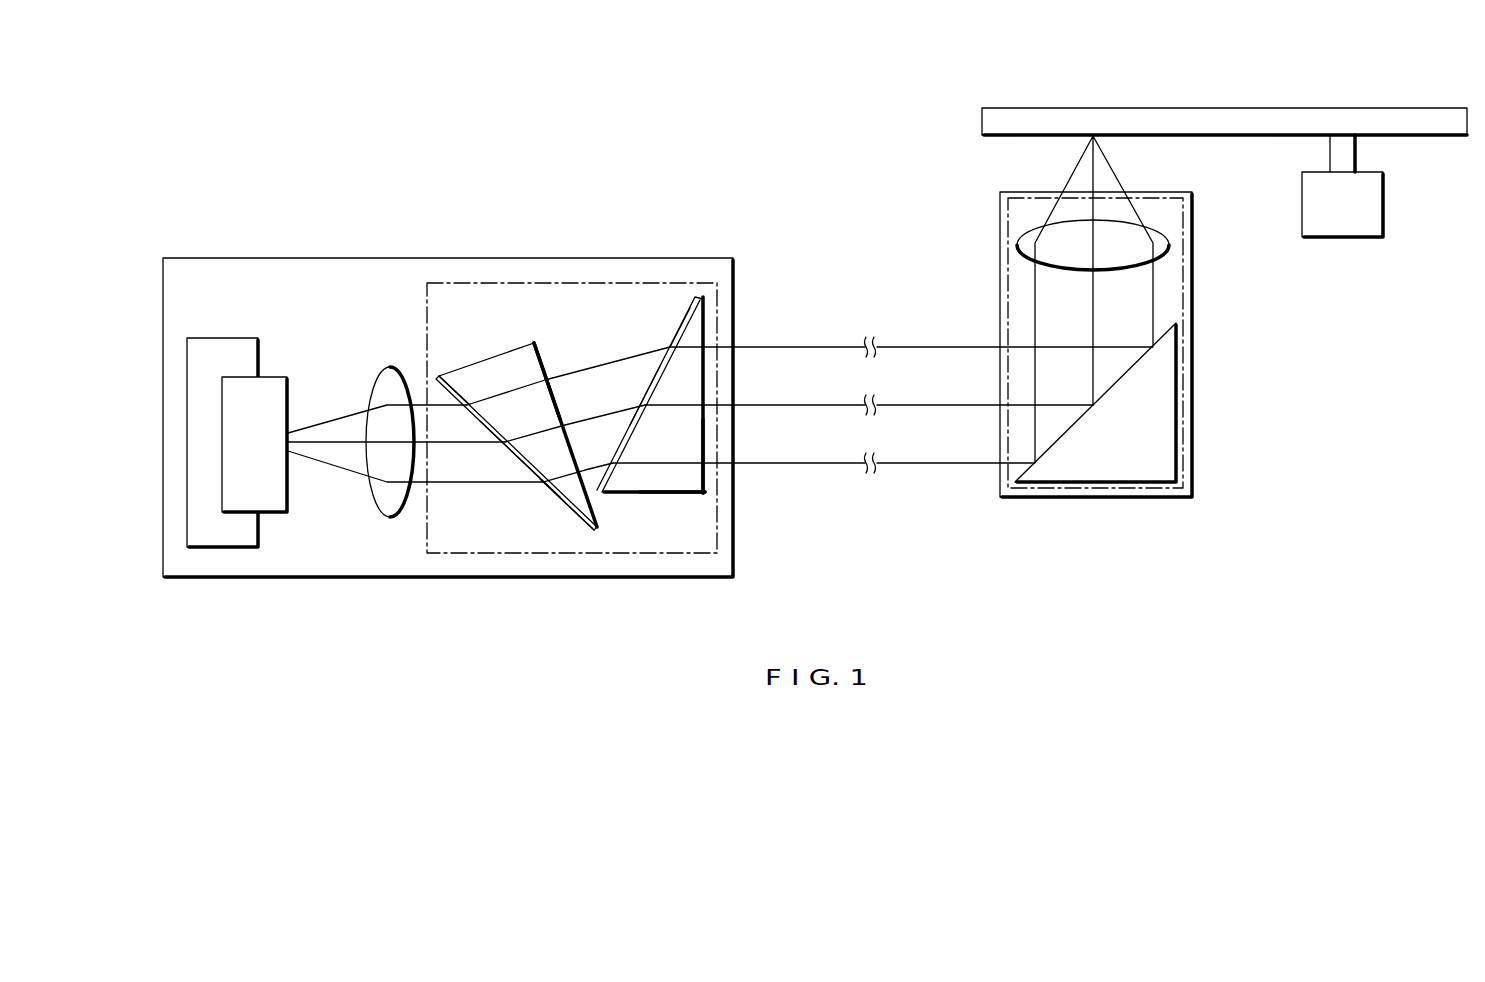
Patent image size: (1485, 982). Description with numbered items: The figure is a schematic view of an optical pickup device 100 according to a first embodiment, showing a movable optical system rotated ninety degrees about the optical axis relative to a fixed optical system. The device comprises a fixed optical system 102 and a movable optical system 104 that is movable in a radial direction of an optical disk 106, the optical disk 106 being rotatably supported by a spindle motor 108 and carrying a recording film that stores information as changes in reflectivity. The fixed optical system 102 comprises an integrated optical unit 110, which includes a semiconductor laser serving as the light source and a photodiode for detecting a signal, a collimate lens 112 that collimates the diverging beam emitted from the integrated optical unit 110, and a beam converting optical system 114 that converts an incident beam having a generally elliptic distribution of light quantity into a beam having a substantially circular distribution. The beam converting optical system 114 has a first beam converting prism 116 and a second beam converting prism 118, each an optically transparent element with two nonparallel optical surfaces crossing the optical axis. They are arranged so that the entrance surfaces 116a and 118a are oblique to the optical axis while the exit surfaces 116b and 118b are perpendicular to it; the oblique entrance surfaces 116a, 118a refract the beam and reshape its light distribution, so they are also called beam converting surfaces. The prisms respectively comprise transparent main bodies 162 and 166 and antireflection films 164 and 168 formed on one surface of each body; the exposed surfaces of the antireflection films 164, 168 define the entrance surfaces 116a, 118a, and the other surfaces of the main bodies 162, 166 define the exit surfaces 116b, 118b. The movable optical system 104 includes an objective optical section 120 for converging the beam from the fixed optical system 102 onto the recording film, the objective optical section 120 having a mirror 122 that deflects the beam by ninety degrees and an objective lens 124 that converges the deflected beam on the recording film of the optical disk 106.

The optical pickup apparatus 100 is at (614, 123).
The fixed optical system 102 is at (552, 257).
The movable optical system 104 is at (1193, 280).
The optical disk 106 is at (1122, 108).
The spindle motor 108 is at (1385, 203).
The integrated optical unit 110 is at (225, 338).
The collimate lens 112 is at (388, 365).
The beam converting optical system 114 is at (547, 553).
The first beam converting prism 116 is at (490, 346).
The entrance surface of first beam converting prism 116a is at (520, 463).
The exit surface of first beam converting prism 116b is at (538, 352).
The second beam converting prism 118 is at (664, 505).
The entrance surface of second beam converting prism 118a is at (643, 393).
The exit surface of second beam converting prism 118b is at (705, 475).
The objective optical section 120 is at (1185, 358).
The mirror 122 is at (1160, 433).
The objective lens 124 is at (1020, 243).
The transparent main body of first beam converting prism 162 is at (463, 378).
The antireflection film of first beam converting prism 164 is at (567, 502).
The transparent main body of second beam converting prism 166 is at (703, 493).
The antireflection film of second beam converting prism 168 is at (682, 325).